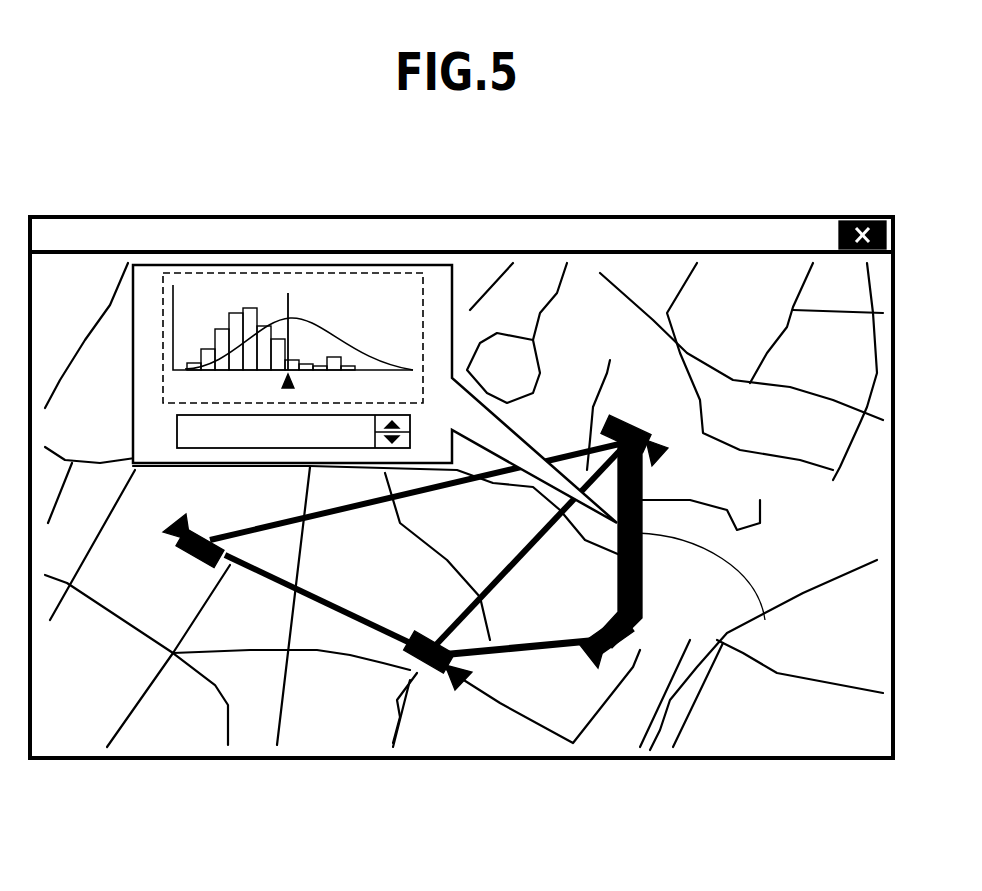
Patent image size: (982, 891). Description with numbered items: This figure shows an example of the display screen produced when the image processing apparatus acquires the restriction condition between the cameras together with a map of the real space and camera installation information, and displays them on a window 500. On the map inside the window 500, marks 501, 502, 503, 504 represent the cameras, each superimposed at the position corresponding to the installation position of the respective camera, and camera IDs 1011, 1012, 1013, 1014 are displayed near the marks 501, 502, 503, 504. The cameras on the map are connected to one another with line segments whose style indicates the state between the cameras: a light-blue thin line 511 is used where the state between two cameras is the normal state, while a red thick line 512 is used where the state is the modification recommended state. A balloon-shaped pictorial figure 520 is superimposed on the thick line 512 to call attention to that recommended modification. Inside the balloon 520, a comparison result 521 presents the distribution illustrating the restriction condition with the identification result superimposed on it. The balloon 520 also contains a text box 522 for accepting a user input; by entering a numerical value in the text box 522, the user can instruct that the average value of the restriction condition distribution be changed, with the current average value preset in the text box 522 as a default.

The window 500 is at (803, 217).
The mark 501 is at (227, 565).
The mark 502 is at (677, 323).
The mark 503 is at (642, 693).
The mark 504 is at (431, 724).
The thin line 511 is at (563, 468).
The thick line 512 is at (765, 620).
The balloon-shaped pictorial figure 520 is at (372, 342).
The comparison result 521 is at (298, 273).
The text box 522 is at (177, 433).
The camera 1011 is at (184, 553).
The camera 1012 is at (622, 425).
The camera 1013 is at (645, 630).
The camera 1014 is at (428, 672).